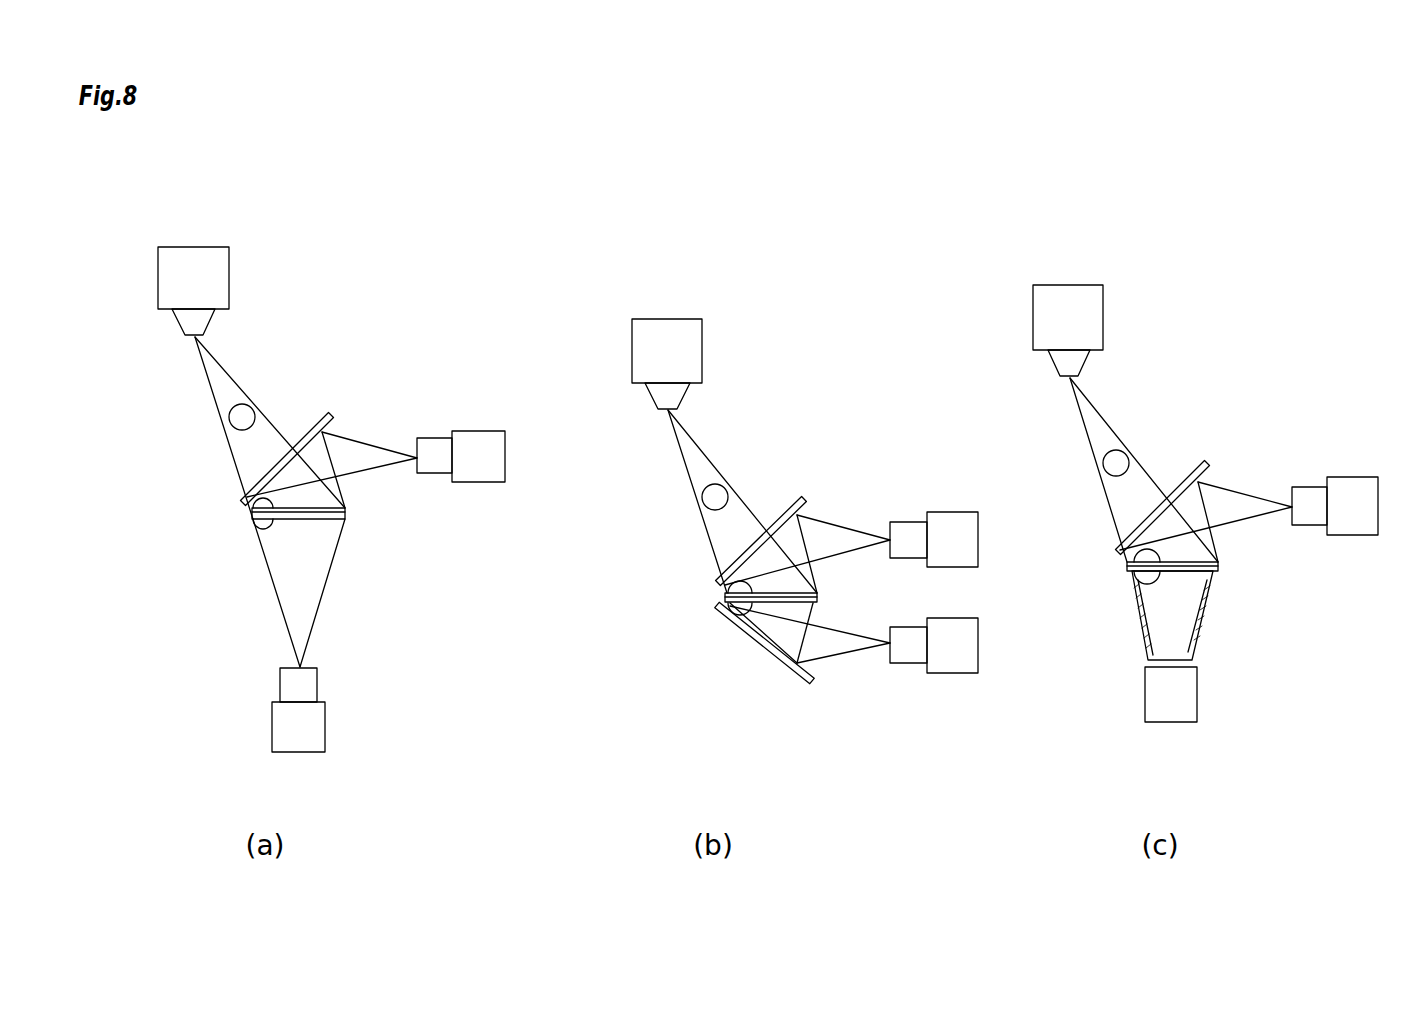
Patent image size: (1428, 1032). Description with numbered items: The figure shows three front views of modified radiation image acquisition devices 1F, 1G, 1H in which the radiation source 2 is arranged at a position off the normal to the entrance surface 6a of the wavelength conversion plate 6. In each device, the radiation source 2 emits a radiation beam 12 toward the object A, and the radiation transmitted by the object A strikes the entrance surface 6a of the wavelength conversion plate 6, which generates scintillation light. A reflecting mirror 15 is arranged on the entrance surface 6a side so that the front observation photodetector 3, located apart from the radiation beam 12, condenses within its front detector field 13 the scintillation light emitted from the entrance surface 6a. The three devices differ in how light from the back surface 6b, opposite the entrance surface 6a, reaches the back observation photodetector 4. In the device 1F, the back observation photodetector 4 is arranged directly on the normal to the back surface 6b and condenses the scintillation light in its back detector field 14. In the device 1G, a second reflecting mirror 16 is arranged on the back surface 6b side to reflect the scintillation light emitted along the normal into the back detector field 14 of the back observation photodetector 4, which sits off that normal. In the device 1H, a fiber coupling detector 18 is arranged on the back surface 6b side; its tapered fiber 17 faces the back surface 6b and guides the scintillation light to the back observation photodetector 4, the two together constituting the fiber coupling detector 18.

The radiation image acquisition device 1F is at (325, 282).
The radiation image acquisition device 1G is at (792, 362).
The radiation image acquisition device 1H is at (1214, 287).
The radiation source 2 is at (190, 247).
The front observation photodetector 3 is at (505, 460).
The back observation photodetector 4 is at (328, 722).
The wavelength conversion plate 6 is at (352, 513).
The entrance surface 6a is at (248, 494).
The back surface 6b is at (253, 521).
The radiation beam 12 is at (222, 387).
The front detector field 13 is at (367, 447).
The back detector field 14 is at (302, 591).
The reflecting mirror 15 is at (330, 413).
The reflecting mirror 16 is at (812, 684).
The tapered fiber 17 is at (1203, 620).
The fiber coupling detector 18 is at (1280, 628).
The object A is at (248, 405).